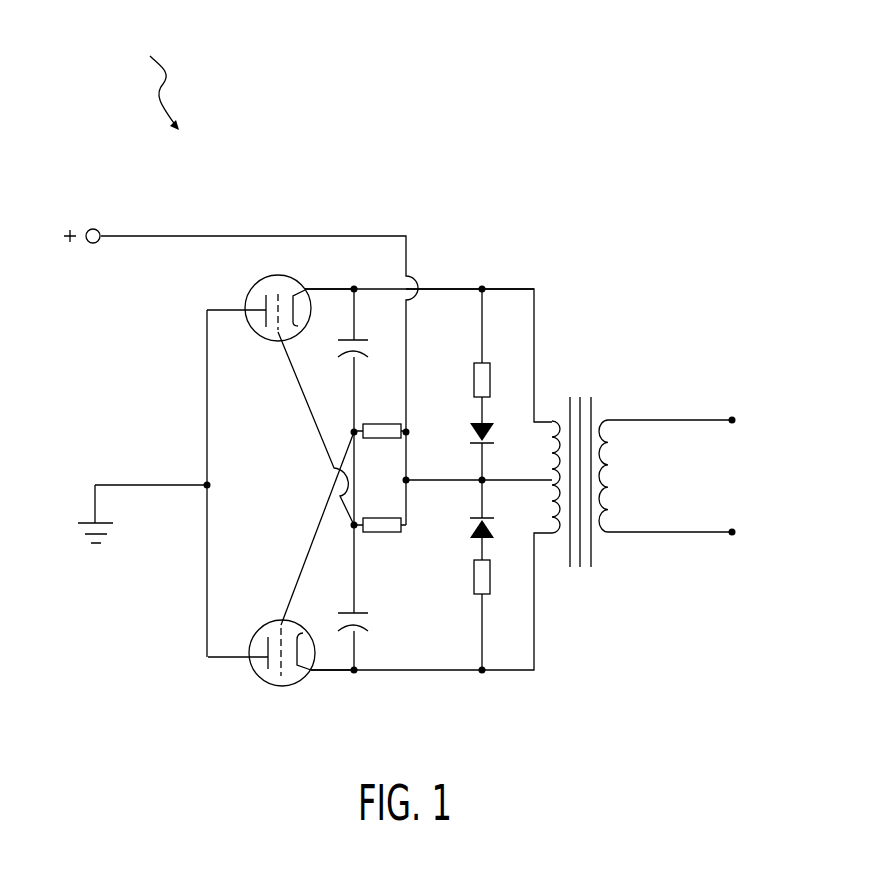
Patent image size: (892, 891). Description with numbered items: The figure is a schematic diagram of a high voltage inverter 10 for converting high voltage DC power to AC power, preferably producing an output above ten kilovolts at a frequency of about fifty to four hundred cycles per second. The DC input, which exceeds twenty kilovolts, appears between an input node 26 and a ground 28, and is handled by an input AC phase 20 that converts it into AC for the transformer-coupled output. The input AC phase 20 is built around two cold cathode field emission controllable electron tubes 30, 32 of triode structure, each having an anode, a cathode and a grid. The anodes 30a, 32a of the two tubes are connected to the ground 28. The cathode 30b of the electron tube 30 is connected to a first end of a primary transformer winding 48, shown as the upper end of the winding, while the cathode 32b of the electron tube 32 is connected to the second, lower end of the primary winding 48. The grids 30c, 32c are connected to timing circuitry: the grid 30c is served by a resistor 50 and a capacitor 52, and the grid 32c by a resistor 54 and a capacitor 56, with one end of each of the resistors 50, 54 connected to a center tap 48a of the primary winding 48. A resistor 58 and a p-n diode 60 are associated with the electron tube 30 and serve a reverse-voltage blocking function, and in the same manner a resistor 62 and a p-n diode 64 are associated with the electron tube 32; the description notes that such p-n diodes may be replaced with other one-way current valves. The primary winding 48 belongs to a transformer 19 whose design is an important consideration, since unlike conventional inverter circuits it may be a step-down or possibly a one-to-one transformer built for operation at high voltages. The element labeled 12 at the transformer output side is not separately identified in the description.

The high voltage inverter 10 is at (139, 50).
The load / output terminals 12 is at (725, 384).
The transformer 19 is at (582, 575).
The input AC phase 20 is at (554, 256).
The input node 26 is at (88, 228).
The ground 28 is at (92, 502).
The cold cathode field emission controllable electron tube 30 is at (256, 284).
The anode 30a is at (226, 306).
The cathode 30b is at (322, 285).
The grid 30c is at (290, 385).
The cold cathode field emission controllable electron tube 32 is at (255, 630).
The anode 32a is at (240, 660).
The cathode 32b is at (320, 675).
The grid 32c is at (300, 560).
The primary transformer winding 48 is at (546, 418).
The center tap 48a is at (538, 488).
The resistor 50 is at (384, 518).
The capacitor 52 is at (366, 624).
The resistor 54 is at (372, 424).
The capacitor 56 is at (340, 348).
The resistor 58 is at (474, 383).
The p-n diode 60 is at (470, 432).
The resistor 62 is at (474, 570).
The p-n diode 64 is at (470, 534).